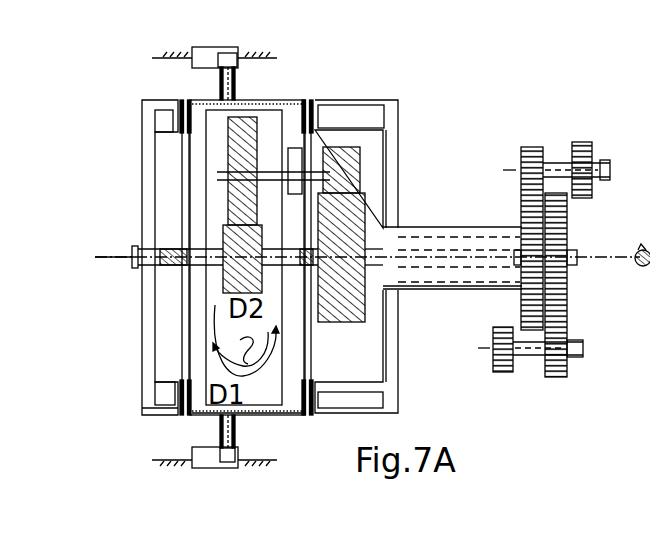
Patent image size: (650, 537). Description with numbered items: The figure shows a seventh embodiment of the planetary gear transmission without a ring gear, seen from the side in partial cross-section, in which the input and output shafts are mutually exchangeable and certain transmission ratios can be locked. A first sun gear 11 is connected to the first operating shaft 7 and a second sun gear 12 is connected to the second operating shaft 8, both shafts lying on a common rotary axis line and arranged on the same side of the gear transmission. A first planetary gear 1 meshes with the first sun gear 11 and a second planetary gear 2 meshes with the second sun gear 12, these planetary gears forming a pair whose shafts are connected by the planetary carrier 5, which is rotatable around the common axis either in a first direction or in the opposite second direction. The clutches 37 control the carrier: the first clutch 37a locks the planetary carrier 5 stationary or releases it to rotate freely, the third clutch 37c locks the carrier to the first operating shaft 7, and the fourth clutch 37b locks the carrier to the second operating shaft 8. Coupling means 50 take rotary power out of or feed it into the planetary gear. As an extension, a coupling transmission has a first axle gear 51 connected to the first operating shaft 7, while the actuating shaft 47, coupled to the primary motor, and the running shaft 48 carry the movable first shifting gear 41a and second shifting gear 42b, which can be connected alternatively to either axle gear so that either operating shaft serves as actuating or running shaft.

The first planetary gear 1 is at (343, 147).
The second planetary gear 2 is at (229, 202).
The planetary carrier 5 is at (289, 417).
The first operating shaft 7 is at (445, 232).
The second operating shaft 8 is at (168, 250).
The first sun gear 11 is at (366, 299).
The second sun gear 12 is at (225, 277).
The clutch 37 is at (194, 234).
The first clutch 37a is at (247, 82).
The fourth clutch 37b is at (178, 418).
The third clutch 37c is at (320, 97).
The first shifting gear 41a is at (520, 147).
The second shifting gear 42b is at (563, 362).
The actuating shaft 47 is at (563, 168).
The running shaft 48 is at (528, 353).
The coupling means 50 is at (421, 292).
The first axle gear 51 is at (518, 298).